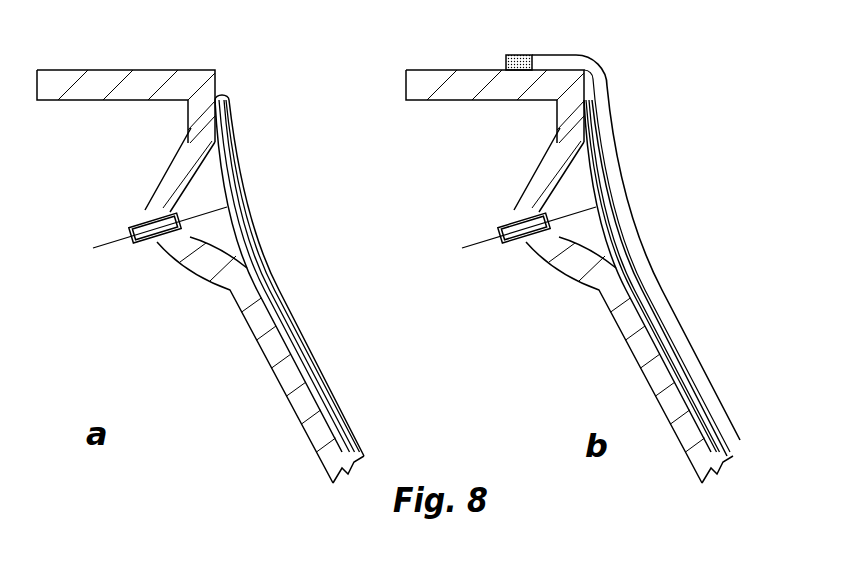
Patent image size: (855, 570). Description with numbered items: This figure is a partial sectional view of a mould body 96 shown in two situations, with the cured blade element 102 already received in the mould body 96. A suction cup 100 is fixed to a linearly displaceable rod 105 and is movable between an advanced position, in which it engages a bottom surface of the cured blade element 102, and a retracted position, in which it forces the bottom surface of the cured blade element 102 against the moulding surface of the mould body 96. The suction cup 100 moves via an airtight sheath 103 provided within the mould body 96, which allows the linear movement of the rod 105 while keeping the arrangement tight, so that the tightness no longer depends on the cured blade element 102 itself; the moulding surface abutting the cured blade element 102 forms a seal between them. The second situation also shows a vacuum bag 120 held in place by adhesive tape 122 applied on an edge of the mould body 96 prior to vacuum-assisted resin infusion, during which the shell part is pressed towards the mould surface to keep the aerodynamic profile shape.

The mould body 96 is at (257, 305).
The suction cup 100 is at (237, 175).
The cured blade element 102 is at (297, 323).
The airtight sheath 103 is at (135, 222).
The linearly displaceable rod 105 is at (106, 242).
The vacuum bag 120 is at (609, 96).
The adhesive tape 122 is at (506, 62).